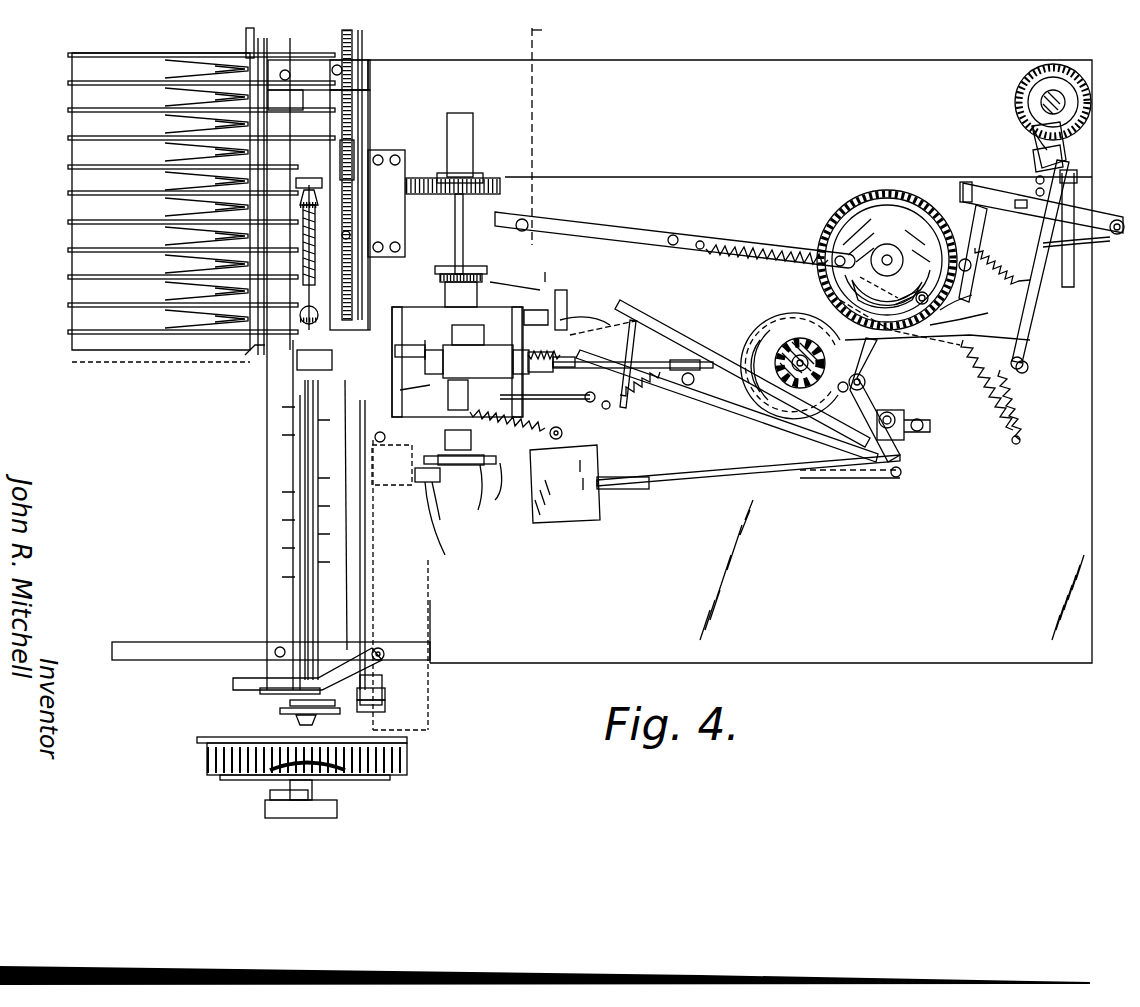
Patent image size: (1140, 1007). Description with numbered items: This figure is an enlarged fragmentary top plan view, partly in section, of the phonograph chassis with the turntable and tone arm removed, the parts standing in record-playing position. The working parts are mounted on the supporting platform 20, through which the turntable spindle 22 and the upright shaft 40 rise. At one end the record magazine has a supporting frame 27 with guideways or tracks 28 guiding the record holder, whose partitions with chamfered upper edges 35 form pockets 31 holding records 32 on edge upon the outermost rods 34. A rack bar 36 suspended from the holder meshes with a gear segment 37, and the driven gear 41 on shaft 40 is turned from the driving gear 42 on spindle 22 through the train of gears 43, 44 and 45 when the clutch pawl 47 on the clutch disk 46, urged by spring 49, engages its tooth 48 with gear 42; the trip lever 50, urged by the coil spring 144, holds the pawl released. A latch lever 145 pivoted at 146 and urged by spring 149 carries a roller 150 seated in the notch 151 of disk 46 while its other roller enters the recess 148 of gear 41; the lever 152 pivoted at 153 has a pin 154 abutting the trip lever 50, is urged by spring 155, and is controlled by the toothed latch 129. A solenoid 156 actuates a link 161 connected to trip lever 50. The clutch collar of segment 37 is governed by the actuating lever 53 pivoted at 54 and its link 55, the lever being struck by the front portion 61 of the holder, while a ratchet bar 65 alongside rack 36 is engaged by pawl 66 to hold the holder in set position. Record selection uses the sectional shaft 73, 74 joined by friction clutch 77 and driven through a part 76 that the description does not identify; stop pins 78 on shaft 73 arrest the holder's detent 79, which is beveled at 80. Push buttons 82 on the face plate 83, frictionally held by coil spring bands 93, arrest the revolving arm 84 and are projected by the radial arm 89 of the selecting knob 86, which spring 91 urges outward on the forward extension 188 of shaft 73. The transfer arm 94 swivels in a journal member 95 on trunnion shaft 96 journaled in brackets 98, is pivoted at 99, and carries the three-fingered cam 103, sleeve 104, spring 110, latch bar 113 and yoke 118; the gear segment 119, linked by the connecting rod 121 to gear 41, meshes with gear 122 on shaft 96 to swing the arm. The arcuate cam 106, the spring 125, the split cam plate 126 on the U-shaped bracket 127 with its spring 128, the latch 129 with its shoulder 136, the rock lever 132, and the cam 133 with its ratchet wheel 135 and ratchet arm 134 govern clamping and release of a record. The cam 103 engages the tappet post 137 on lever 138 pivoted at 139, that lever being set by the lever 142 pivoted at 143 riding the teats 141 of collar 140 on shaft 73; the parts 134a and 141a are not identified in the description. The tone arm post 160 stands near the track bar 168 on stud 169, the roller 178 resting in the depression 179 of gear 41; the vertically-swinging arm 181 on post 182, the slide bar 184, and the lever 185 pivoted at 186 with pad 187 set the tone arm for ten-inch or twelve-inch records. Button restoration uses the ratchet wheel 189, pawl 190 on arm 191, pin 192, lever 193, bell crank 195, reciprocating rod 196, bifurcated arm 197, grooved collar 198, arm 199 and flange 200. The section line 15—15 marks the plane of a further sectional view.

The center line 15 is at (330, 790).
The frame plate 20 is at (730, 361).
The lever bar 22 is at (790, 400).
The base bar 27 is at (130, 652).
The post 28 is at (268, 578).
The magazine block 31 is at (80, 178).
The rods 32 is at (68, 110).
The worm 34 is at (303, 265).
The nozzles 35 is at (205, 122).
The rack 36 is at (354, 95).
The pinion 37 is at (356, 145).
The hub 40 is at (887, 256).
The gear 41 is at (887, 192).
The star wheel 42 is at (805, 400).
The lever 43 is at (727, 406).
The link 44 is at (937, 332).
The bevel gear / spring 45 is at (307, 188).
The ring 46 is at (760, 355).
The ring 47 is at (790, 345).
The arm 48 is at (768, 345).
The pin 49 is at (861, 400).
The bracket 50 is at (912, 440).
The lever 53 is at (233, 684).
The pivot 54 is at (382, 650).
The rod 55 is at (350, 562).
The link 61 is at (275, 375).
The rod 65 is at (364, 48).
The gear 66 is at (318, 318).
The rod 73 is at (296, 510).
The link 74 is at (280, 370).
The plate 76 is at (354, 280).
The link 77 is at (265, 345).
The link 78 is at (300, 430).
The link 79 is at (285, 355).
The link 80 is at (303, 637).
The gear 82 is at (360, 775).
The plate 83 is at (197, 740).
The pawl 84 is at (296, 722).
The hub 86 is at (265, 812).
The collar 89 is at (290, 790).
The block 91 is at (472, 440).
The plate 93 is at (225, 780).
The pin 94 is at (710, 381).
The carriage 95 is at (477, 361).
The lever 96 is at (470, 214).
The column 98 is at (475, 160).
The collar 99 is at (548, 348).
The arm 103 is at (410, 380).
The block 104 is at (438, 410).
The pin 106 is at (420, 348).
The rod 110 is at (580, 355).
The rod 113 is at (650, 360).
The rod 118 is at (632, 320).
The bracket 119 is at (416, 190).
The spring 121 is at (572, 232).
The gear 122 is at (495, 178).
The spring 125 is at (564, 342).
The block 126 is at (479, 331).
The pin 127 is at (584, 435).
The spring 128 is at (507, 428).
The arm 129 is at (560, 300).
The bracket 132 is at (565, 290).
The arm 133 is at (515, 278).
The gear 134 is at (470, 268).
The block 134a is at (416, 489).
The bearing 135 is at (448, 283).
The pin 136 is at (548, 264).
The block 137 is at (390, 338).
The pin 138 is at (385, 436).
The pin 139 is at (633, 435).
The rod 140 is at (367, 377).
The arm 141 is at (1075, 135).
The arm 141a is at (1030, 130).
The gear 142 is at (1050, 64).
The frame 143 is at (365, 325).
The bar 144 is at (948, 414).
The lever 145 is at (1000, 185).
The spring 146 is at (960, 190).
The link 148 is at (835, 300).
The spring 149 is at (1027, 405).
The pin 150 is at (857, 392).
The pin 151 is at (1015, 443).
The bar 152 is at (845, 480).
The pin 153 is at (685, 385).
The pin 154 is at (905, 478).
The spring 155 is at (647, 390).
The plate 156 is at (573, 520).
The hub 160 is at (1065, 95).
The bar 161 is at (724, 474).
The block 168 is at (1022, 208).
The pivot 169 is at (1120, 220).
The link 178 is at (976, 296).
The link 179 is at (979, 313).
The arm 181 is at (1110, 234).
The arm 182 is at (1080, 263).
The rod 184 is at (1050, 258).
The pin 185 is at (1025, 360).
The block 186 is at (1078, 177).
The pin 187 is at (1061, 371).
The spring 188 is at (1004, 261).
The wire 189 is at (483, 501).
The wire 190 is at (514, 490).
The plate 191 is at (490, 462).
The wire 192 is at (449, 513).
The wire 193 is at (452, 523).
The box 195 is at (393, 465).
The dashed guide 196 is at (380, 597).
The block 197 is at (388, 690).
The plate 198 is at (319, 696).
The plate 199 is at (290, 700).
The block 200 is at (350, 708).